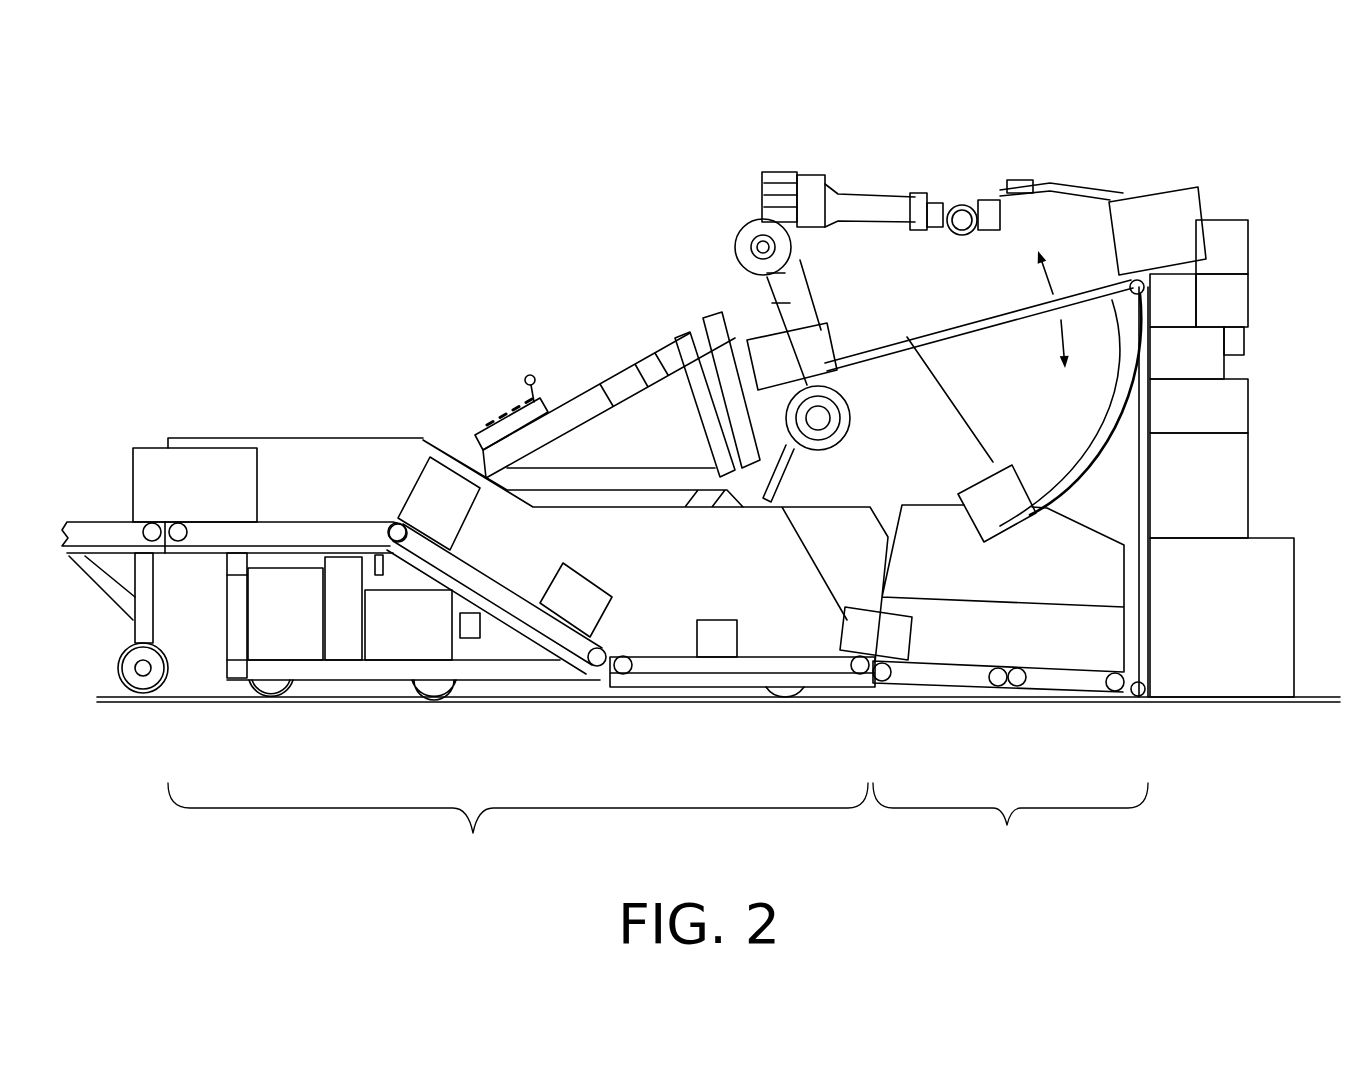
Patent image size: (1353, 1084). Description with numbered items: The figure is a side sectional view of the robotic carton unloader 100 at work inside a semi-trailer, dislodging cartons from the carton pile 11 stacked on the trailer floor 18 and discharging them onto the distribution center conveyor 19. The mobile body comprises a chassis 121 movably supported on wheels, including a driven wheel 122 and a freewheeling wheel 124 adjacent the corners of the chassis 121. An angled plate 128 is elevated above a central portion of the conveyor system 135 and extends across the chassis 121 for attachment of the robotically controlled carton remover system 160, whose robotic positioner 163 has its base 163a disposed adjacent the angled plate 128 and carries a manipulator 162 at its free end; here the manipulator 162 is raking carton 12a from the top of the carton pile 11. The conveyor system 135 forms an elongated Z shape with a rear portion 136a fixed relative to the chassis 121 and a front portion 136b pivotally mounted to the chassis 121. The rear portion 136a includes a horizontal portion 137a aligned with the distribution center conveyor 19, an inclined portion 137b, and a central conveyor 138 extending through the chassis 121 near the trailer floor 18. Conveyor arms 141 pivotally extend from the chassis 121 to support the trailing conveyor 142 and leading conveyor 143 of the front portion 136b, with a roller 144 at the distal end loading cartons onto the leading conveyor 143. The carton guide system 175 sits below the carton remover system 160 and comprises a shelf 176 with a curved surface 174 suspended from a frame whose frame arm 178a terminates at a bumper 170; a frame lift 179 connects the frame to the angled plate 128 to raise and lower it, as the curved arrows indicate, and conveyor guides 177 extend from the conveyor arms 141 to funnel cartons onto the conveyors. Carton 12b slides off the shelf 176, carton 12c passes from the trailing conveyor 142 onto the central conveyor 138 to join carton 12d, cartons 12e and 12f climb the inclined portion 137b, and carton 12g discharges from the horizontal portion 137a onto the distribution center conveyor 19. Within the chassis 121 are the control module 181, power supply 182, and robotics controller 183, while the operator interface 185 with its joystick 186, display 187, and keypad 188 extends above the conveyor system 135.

The robotic carton unloader 100 is at (505, 147).
The carton pile 11 is at (1210, 752).
The trailer floor 18 is at (1310, 673).
The distribution center conveyor 19 is at (90, 520).
The carton 12a is at (1170, 212).
The carton 12b is at (988, 495).
The carton 12c is at (880, 630).
The carton 12d is at (710, 632).
The carton 12e is at (567, 582).
The carton 12f is at (436, 490).
The carton 12g is at (208, 478).
The chassis 121 is at (465, 460).
The wheel 122 is at (785, 690).
The wheel 124 is at (148, 685).
The angled plate 128 is at (708, 390).
The conveyor system 135 is at (327, 492).
The rear portion 136a is at (474, 856).
The front portion 136b is at (1008, 852).
The horizontal portion of rear conveyor 137a is at (287, 530).
The inclined portion of rear conveyor 137b is at (527, 682).
The central conveyor 138 is at (680, 690).
The conveyor arms 141 is at (1140, 668).
The trailing conveyor 142 is at (937, 677).
The leading conveyor 143 is at (1063, 680).
The roller 144 is at (1137, 695).
The robotically controlled carton remover system 160 is at (852, 145).
The manipulator 162 is at (1075, 183).
The robotic positioner 163 is at (780, 173).
The base of robotic positioner 163a is at (728, 387).
The bumper 170 is at (1140, 262).
The surface 174 is at (1093, 443).
The carton guide system 175 is at (1040, 400).
The shelf 176 is at (1045, 380).
The conveyor guides 177 is at (713, 555).
The frame arm 178a is at (965, 327).
The frame lift 179 is at (790, 460).
The control module 181 is at (343, 682).
The power supply 182 is at (408, 682).
The robotics controller 183 is at (273, 618).
The operator interface 185 is at (420, 297).
The joystick 186 is at (525, 373).
The display 187 is at (520, 405).
The keypad 188 is at (497, 437).